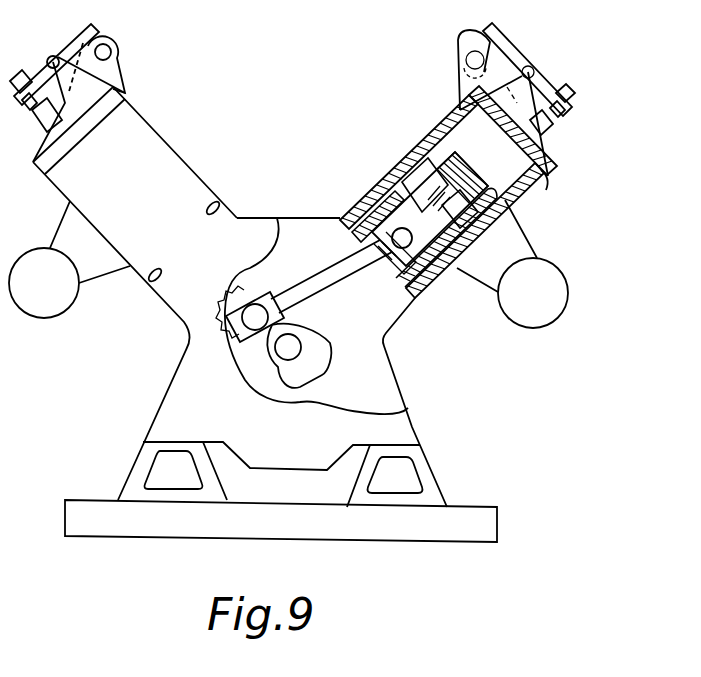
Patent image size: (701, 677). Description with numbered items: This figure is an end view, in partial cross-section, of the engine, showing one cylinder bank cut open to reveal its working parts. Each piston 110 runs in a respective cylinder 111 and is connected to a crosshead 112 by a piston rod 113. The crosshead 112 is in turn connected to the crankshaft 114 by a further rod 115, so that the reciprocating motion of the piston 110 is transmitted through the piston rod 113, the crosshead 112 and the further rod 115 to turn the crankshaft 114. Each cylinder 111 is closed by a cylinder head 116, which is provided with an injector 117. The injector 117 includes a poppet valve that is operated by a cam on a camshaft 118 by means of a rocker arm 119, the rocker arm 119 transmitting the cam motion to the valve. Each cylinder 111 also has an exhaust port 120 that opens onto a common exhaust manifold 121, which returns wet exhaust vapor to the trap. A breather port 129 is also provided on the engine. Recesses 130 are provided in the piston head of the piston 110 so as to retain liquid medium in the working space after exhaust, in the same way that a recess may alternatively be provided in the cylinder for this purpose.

The piston 110 is at (533, 193).
The cylinder 111 is at (520, 210).
The crosshead 112 is at (384, 262).
The piston rod 113 is at (433, 143).
The crankshaft 114 is at (316, 370).
The further rod 115 is at (300, 282).
The cylinder head 116 is at (548, 186).
The injector 117 is at (545, 132).
The camshaft 118 is at (460, 42).
The rocker arm 119 is at (512, 50).
The exhaust port 120 is at (488, 250).
The exhaust manifold 121 is at (558, 310).
The breather port 129 is at (440, 283).
The recess 130 is at (453, 128).